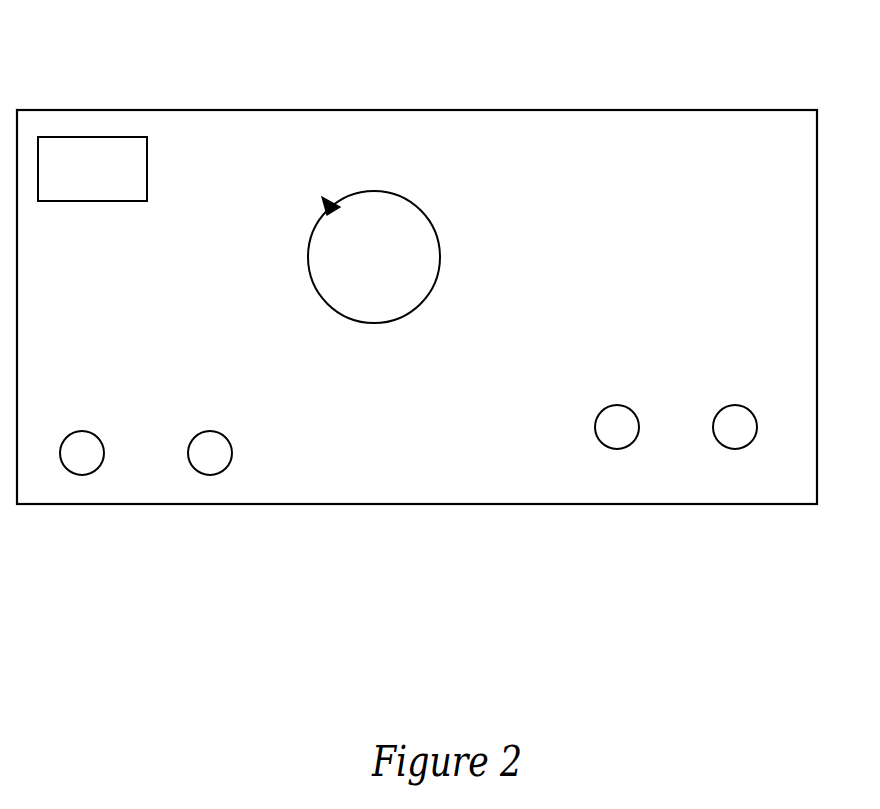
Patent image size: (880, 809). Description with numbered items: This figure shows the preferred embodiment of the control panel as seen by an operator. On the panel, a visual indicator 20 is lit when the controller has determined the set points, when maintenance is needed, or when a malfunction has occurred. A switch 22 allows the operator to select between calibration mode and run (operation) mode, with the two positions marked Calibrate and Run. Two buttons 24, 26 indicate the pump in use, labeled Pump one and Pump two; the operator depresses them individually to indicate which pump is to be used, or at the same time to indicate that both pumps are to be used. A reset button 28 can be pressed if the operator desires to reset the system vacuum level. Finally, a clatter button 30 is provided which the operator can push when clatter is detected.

The visual indicator 20 is at (96, 155).
The switch 22 is at (392, 223).
The button 24 is at (614, 418).
The button 26 is at (731, 418).
The reset button 28 is at (77, 460).
The clatter button 30 is at (205, 460).